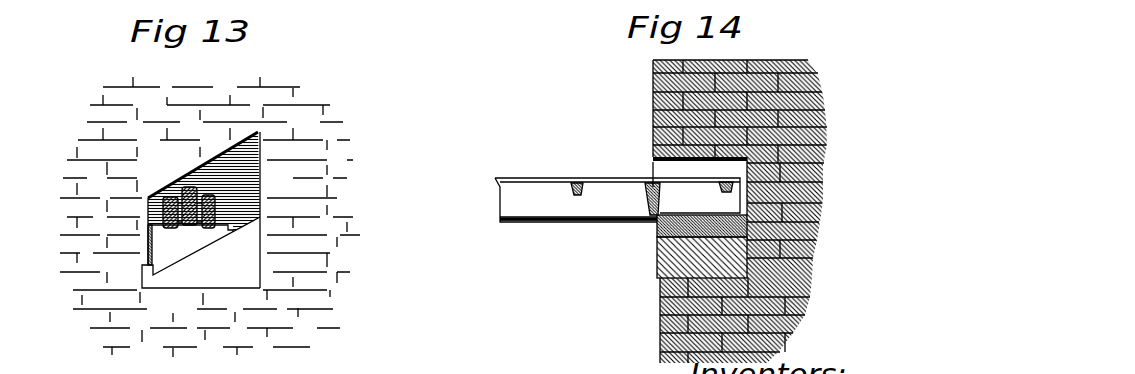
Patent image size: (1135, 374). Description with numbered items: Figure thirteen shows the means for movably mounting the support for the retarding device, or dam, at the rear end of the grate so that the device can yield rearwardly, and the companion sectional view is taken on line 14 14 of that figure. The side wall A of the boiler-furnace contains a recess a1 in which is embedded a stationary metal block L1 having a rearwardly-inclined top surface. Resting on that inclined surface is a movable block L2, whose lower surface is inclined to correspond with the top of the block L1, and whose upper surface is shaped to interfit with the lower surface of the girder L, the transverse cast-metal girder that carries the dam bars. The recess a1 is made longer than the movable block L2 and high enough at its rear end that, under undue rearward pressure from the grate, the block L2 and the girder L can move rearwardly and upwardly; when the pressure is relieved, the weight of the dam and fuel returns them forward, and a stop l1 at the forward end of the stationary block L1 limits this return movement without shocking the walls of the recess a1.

In FIG. 13, the side wall A is at (283, 118).
In FIG. 14, the side wall A is at (652, 90).
In FIG. 13, the section line 14 14 is at (203, 218).
In FIG. 13, the girder L is at (176, 174).
In FIG. 14, the girder L is at (563, 182).
In FIG. 13, the recess a1 is at (238, 177).
In FIG. 14, the recess a1 is at (665, 165).
In FIG. 13, the stationary block L1 is at (228, 258).
In FIG. 14, the stationary block L1 is at (668, 260).
In FIG. 13, the movable block L2 is at (190, 244).
In FIG. 14, the movable block L2 is at (657, 228).
In FIG. 13, the stop l1 is at (140, 268).